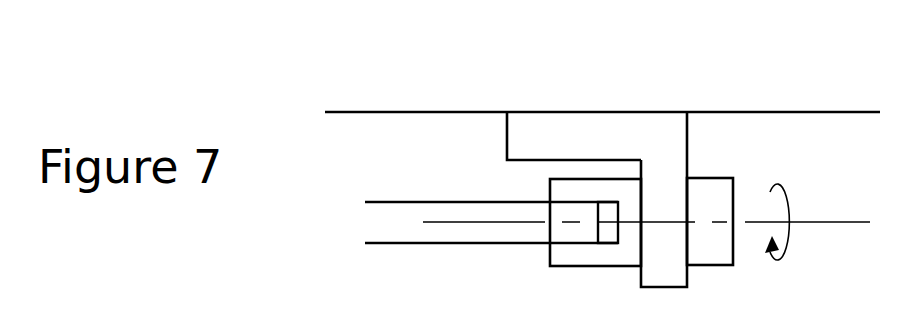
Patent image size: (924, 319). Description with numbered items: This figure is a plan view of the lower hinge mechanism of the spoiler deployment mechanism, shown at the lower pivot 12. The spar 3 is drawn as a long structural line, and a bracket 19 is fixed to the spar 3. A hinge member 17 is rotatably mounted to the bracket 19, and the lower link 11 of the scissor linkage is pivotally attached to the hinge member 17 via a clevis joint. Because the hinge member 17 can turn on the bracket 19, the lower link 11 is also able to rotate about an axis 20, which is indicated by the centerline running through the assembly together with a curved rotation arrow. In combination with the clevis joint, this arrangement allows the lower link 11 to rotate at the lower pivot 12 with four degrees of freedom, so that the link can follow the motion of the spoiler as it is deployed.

The spar 3 is at (390, 113).
The lower link 11 is at (442, 206).
The lower pivot 12 is at (638, 100).
The hinge member 17 is at (708, 178).
The bracket 19 is at (527, 118).
The axis 20 is at (820, 224).